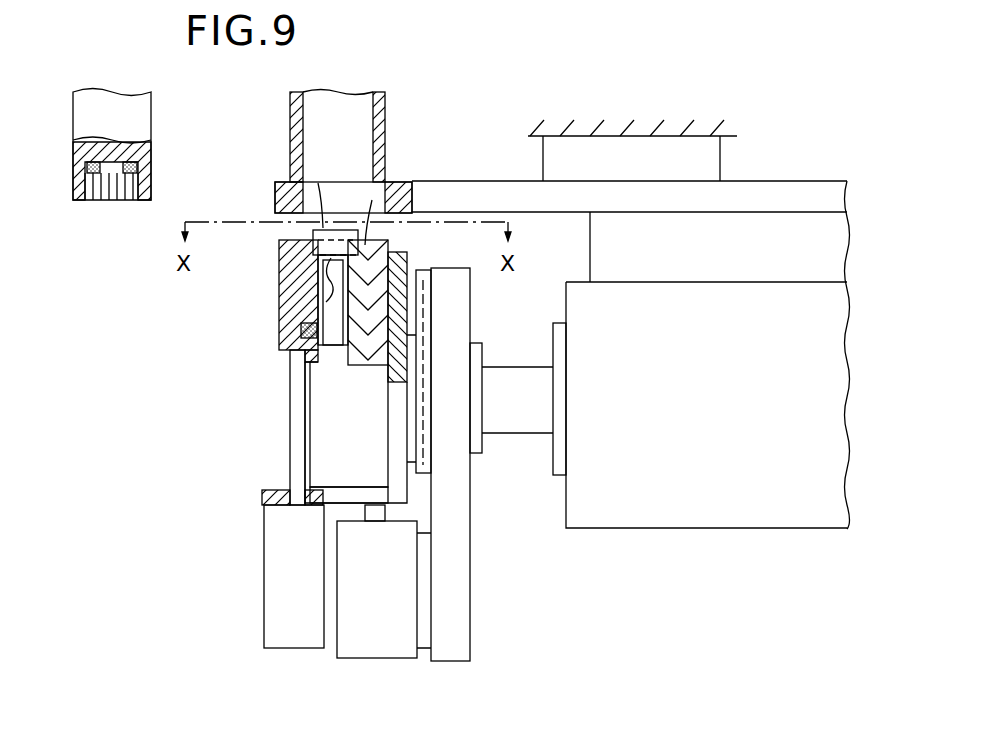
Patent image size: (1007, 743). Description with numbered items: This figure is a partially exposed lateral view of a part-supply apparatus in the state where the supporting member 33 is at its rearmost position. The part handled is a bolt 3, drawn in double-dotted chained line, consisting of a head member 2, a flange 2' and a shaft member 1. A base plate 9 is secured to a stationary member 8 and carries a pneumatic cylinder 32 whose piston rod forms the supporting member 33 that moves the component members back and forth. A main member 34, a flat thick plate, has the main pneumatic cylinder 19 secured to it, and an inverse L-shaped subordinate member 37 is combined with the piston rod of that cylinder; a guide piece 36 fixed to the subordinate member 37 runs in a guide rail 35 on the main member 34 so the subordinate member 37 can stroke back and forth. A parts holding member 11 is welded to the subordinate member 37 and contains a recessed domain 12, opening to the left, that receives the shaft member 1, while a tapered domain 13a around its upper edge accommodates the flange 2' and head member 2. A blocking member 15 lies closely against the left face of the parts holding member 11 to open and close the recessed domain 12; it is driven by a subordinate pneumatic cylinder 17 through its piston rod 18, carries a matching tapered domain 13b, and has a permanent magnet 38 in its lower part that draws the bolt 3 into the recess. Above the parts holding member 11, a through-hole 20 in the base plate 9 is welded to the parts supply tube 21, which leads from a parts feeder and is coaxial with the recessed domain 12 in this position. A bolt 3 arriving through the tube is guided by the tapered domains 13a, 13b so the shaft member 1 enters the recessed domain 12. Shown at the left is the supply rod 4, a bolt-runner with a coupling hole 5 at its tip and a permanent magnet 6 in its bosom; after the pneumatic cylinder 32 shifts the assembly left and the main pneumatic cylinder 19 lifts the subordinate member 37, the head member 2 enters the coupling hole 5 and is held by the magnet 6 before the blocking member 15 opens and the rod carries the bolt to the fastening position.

The shaft member 1 is at (330, 312).
The head member 2 is at (312, 188).
The flange 2' is at (277, 280).
The bolt 3 is at (300, 196).
The supply rod 4 is at (152, 128).
The coupling hole 5 is at (105, 195).
The permanent magnet 6 is at (88, 165).
The stationary member 8 is at (540, 140).
The base plate 9 is at (445, 180).
The parts holding member 11 is at (375, 365).
The recessed domain 12 is at (338, 360).
The tapered domain 13a is at (372, 200).
The tapered domain 13b is at (305, 232).
The blocking member 15 is at (278, 322).
The subordinate pneumatic cylinder 17 is at (264, 567).
The piston rod 18 is at (289, 440).
The main pneumatic cylinder 19 is at (352, 660).
The through-hole 20 is at (335, 200).
The parts supply tube 21 is at (293, 150).
The pneumatic cylinder 32 is at (598, 530).
The supporting member 33 is at (522, 433).
The main member 34 is at (470, 600).
The guide rail 35 is at (423, 265).
The guide piece 36 is at (405, 432).
The subordinate member 37 is at (386, 468).
The permanent magnet 38 is at (301, 335).